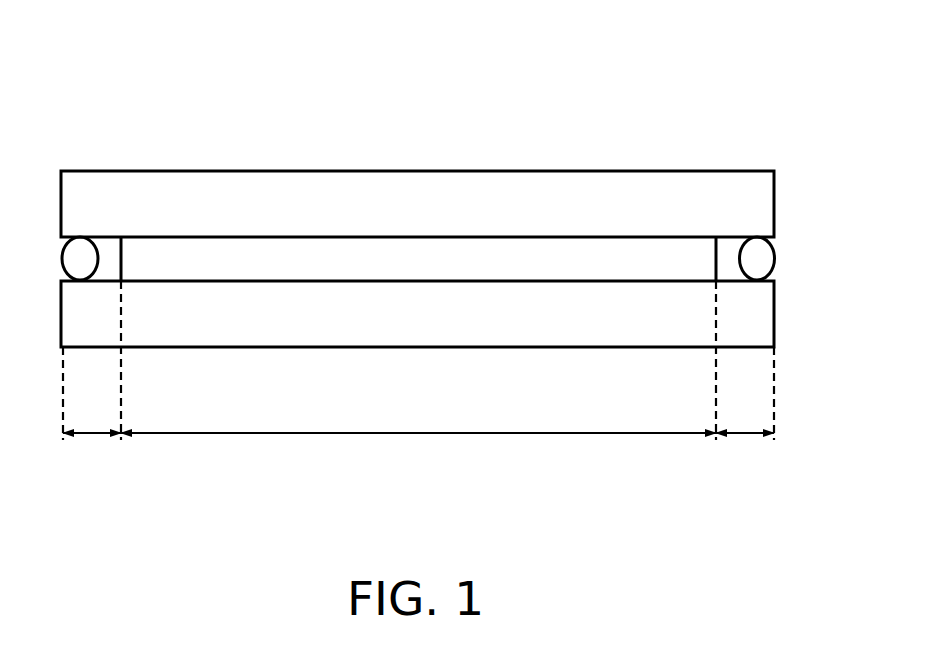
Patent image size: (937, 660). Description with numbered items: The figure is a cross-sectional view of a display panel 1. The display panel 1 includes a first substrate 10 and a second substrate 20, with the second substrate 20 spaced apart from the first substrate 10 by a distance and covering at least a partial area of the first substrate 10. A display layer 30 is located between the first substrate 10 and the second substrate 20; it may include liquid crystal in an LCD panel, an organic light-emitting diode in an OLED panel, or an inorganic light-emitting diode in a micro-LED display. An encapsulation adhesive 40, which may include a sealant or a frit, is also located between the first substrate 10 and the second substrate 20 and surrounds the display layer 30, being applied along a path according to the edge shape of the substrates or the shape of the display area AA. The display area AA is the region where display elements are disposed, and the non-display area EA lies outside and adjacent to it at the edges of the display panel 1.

The display panel 1 is at (58, 105).
The first substrate 10 is at (757, 313).
The second substrate 20 is at (757, 203).
The display layer 30 is at (419, 260).
The encapsulation adhesive 40 is at (757, 261).